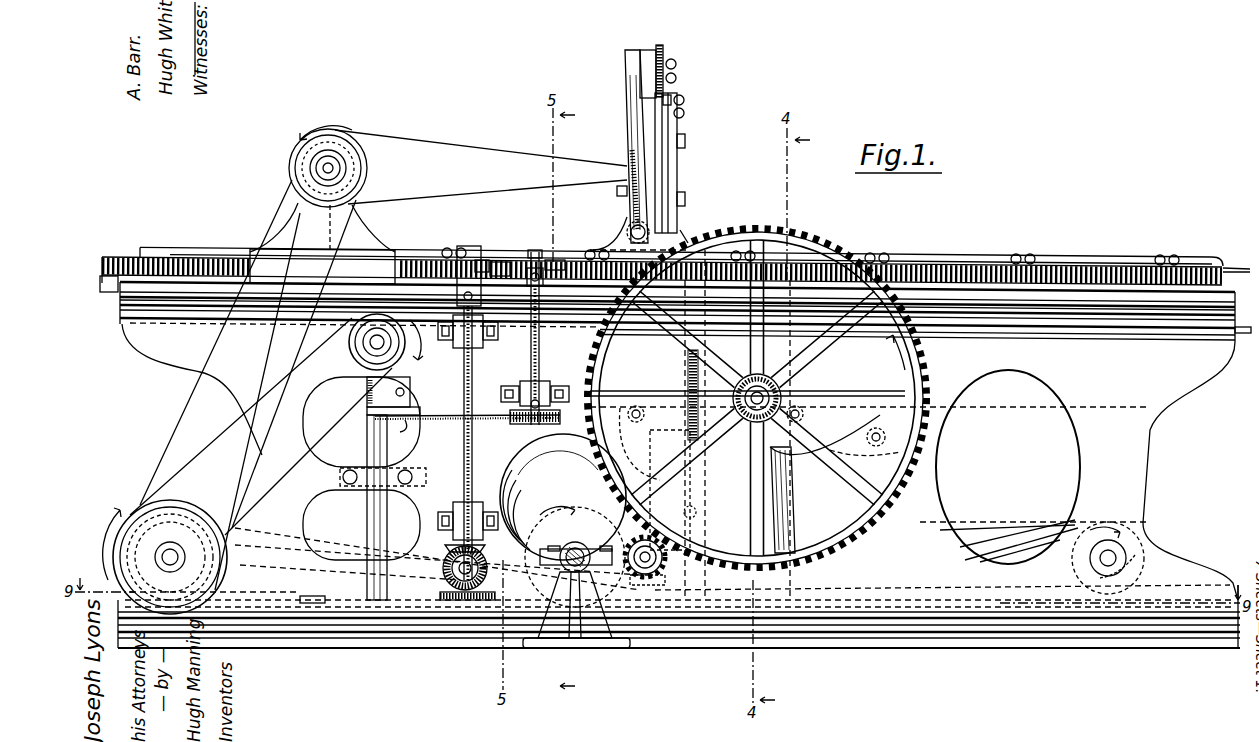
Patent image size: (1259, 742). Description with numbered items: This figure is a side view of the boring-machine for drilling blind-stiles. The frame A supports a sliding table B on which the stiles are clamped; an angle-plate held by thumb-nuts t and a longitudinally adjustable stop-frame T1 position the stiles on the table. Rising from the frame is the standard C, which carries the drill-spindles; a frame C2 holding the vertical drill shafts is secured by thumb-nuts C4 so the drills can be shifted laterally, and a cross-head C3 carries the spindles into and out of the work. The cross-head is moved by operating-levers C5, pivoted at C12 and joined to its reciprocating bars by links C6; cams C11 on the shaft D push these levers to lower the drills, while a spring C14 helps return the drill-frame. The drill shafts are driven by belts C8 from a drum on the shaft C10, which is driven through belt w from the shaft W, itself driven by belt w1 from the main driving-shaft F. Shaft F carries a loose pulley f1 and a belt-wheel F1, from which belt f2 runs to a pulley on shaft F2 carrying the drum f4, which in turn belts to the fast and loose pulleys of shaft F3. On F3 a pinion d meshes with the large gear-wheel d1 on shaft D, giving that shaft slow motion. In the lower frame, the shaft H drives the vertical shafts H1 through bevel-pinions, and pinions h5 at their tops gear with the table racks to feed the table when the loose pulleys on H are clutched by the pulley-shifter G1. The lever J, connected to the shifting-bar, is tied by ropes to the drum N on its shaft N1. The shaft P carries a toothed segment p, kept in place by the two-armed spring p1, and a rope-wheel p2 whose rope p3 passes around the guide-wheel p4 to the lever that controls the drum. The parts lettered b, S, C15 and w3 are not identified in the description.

The frame A is at (679, 465).
The sliding table B is at (662, 256).
The rack end block b is at (102, 284).
The stop-frame T1 is at (695, 255).
The thumb-nuts t is at (810, 247).
The shaft end S is at (1241, 341).
The shaft D is at (869, 415).
The lever J is at (790, 494).
The cam segment C15 is at (848, 452).
The pivot C12 is at (879, 445).
The gear-wheel d1 is at (712, 451).
The pinion d is at (675, 520).
The standard C is at (686, 214).
The cross-head C3 is at (650, 68).
The operating-levers C5 is at (668, 62).
The links or connecting-rods C6 is at (685, 65).
The frame C2 is at (672, 92).
The thumb-nuts C4 is at (694, 104).
The cams C11 is at (680, 126).
The spring C14 is at (620, 190).
The shaft C10 is at (300, 164).
The belts C8 is at (486, 155).
The shaft W is at (165, 557).
The belt w is at (182, 425).
The belt w1 is at (300, 458).
The belt guide w3 is at (428, 340).
The shaft N1 is at (352, 346).
The drum N is at (368, 435).
The guide-wheel p4 is at (399, 436).
The vertical shafts H1 is at (462, 465).
The shaft H is at (488, 564).
The pulley-shifter G1 is at (445, 597).
The shaft P is at (535, 337).
The toothed segment p is at (510, 262).
The two-armed spring p1 is at (505, 262).
The rope-wheel p2 is at (520, 426).
The rope p3 is at (455, 423).
The pinions h5 is at (480, 262).
The belt-wheel F1 is at (562, 500).
The main driving-shaft F is at (578, 542).
The shaft F3 is at (634, 565).
The shaft F2 is at (1095, 560).
The loose pulley f1 is at (960, 534).
The belt f2 is at (1005, 545).
The drum f4 is at (1140, 552).